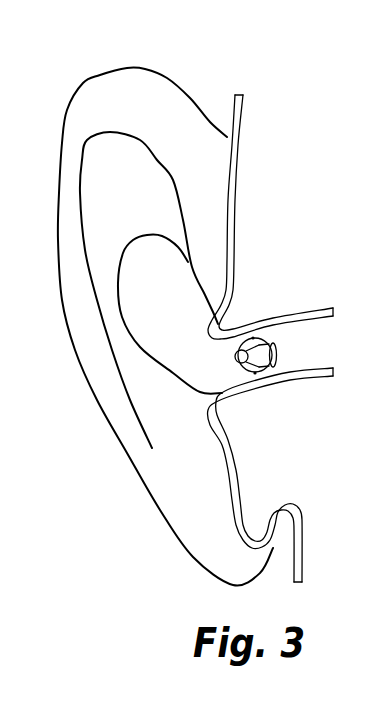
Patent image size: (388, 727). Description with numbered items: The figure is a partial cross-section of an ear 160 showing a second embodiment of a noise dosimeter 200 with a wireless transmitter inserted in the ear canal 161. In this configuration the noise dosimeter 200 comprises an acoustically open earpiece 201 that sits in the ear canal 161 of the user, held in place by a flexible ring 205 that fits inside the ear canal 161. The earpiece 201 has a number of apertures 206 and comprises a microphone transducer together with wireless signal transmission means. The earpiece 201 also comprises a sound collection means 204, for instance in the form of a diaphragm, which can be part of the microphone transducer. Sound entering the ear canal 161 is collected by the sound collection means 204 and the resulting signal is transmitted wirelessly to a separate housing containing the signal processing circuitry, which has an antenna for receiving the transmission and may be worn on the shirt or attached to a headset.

The ear 160 is at (142, 104).
The ear canal 161 is at (313, 350).
The noise dosimeter 200 is at (304, 338).
The acoustically open earpiece 201 is at (288, 370).
The sound collection means 204 is at (241, 367).
The flexible ring 205 is at (280, 349).
The apertures 206 is at (254, 337).